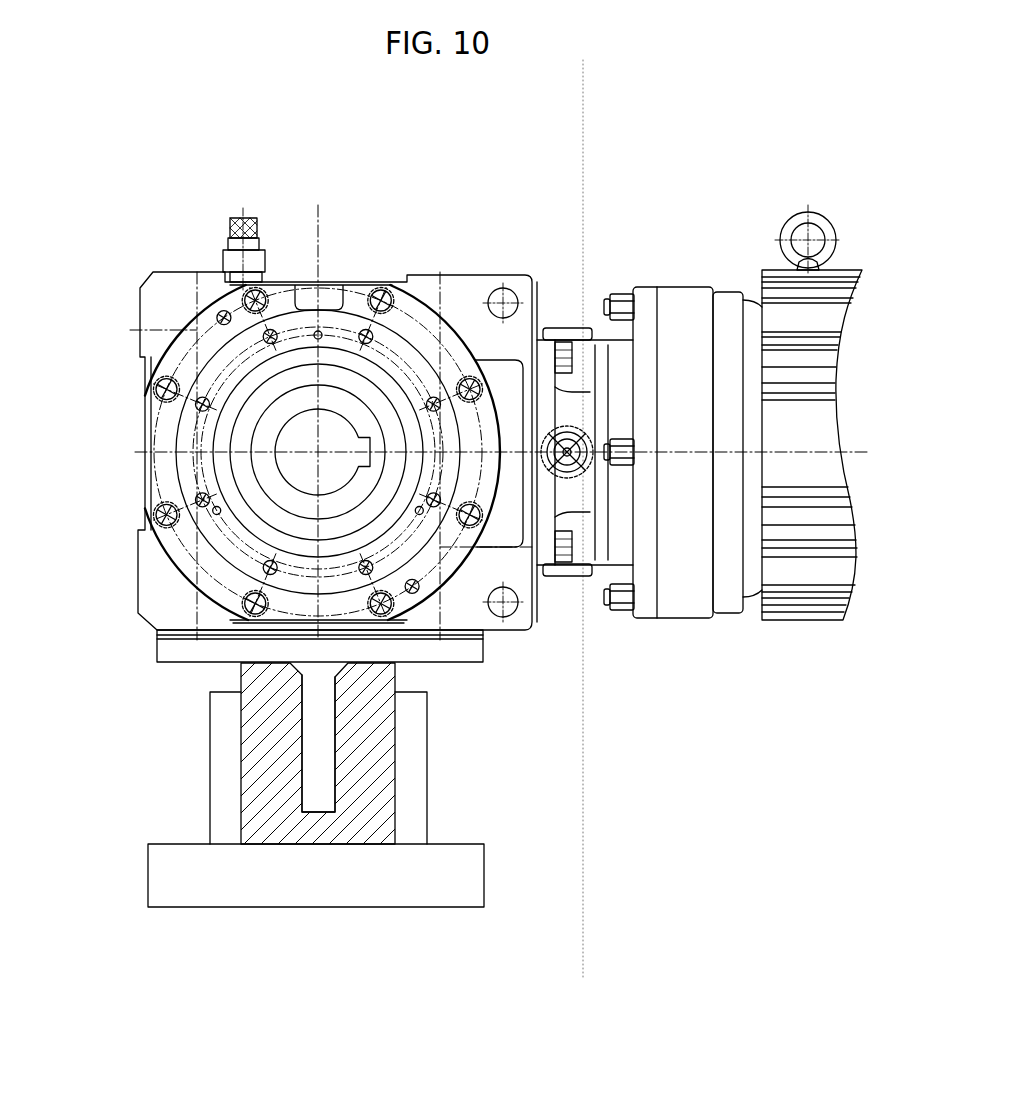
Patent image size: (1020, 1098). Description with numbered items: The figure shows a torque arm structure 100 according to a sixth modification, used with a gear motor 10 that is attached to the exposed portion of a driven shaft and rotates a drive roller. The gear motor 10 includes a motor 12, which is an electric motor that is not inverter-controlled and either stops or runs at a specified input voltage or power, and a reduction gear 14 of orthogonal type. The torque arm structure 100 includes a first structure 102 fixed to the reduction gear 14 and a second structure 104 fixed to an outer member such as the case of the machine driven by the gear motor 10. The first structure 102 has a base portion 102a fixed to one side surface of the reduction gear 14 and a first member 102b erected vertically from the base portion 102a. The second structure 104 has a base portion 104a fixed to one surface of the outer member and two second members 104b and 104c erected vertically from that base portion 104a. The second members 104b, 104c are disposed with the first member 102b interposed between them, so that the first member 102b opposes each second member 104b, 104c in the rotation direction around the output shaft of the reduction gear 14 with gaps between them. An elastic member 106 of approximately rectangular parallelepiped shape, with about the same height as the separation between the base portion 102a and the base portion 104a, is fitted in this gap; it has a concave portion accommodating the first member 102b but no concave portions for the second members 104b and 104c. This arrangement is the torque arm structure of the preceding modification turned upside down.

The gear motor 10 is at (668, 206).
The motor 12 is at (780, 290).
The reduction gear 14 is at (477, 293).
The torque arm structure 100 is at (683, 640).
The first structure 102 is at (93, 685).
The base portion 102a is at (182, 653).
The first member 102b is at (315, 712).
The second structure 104 is at (597, 777).
The base portion 104a is at (462, 877).
The second member 104b is at (227, 798).
The second member 104c is at (412, 817).
The elastic member 106 is at (363, 710).